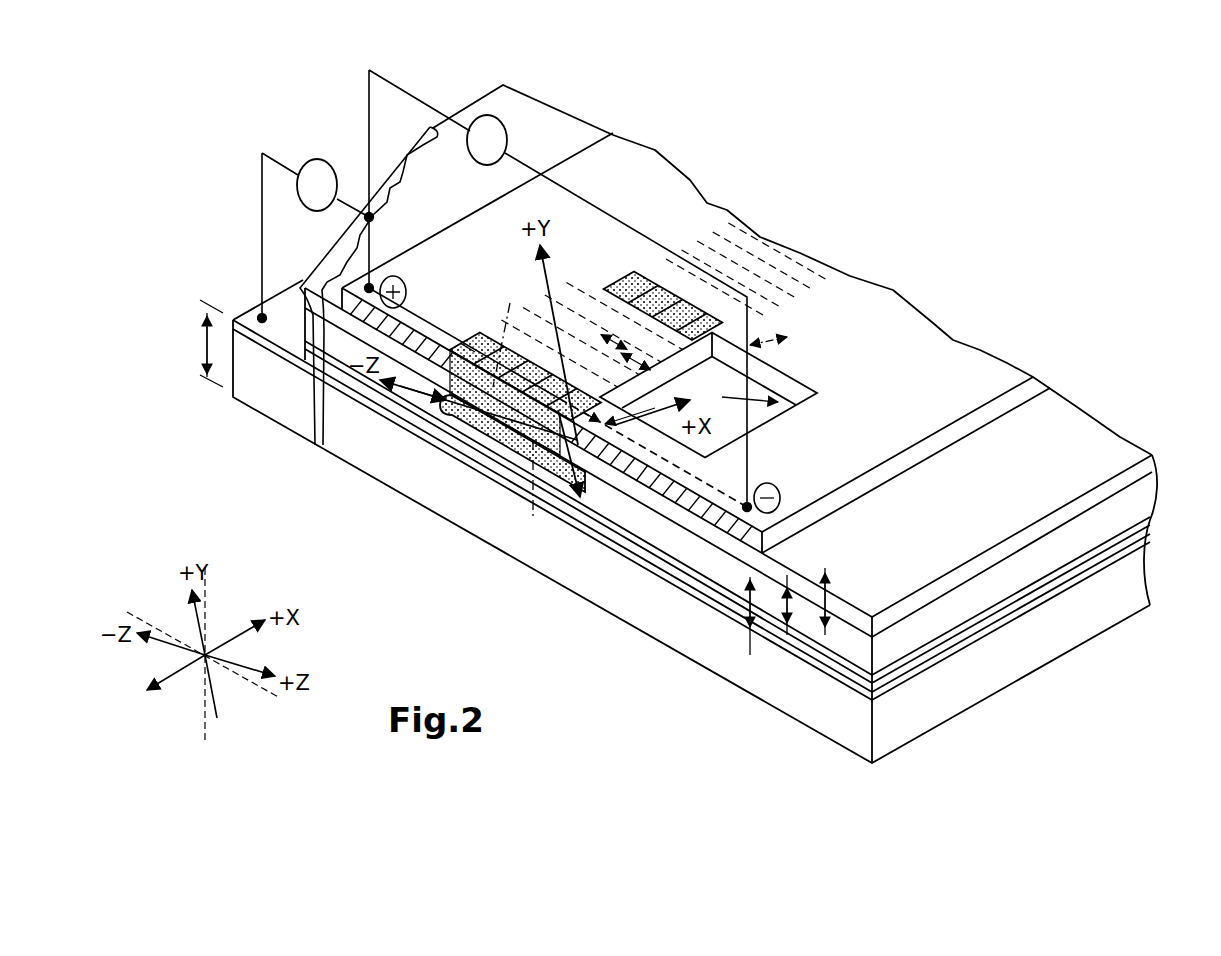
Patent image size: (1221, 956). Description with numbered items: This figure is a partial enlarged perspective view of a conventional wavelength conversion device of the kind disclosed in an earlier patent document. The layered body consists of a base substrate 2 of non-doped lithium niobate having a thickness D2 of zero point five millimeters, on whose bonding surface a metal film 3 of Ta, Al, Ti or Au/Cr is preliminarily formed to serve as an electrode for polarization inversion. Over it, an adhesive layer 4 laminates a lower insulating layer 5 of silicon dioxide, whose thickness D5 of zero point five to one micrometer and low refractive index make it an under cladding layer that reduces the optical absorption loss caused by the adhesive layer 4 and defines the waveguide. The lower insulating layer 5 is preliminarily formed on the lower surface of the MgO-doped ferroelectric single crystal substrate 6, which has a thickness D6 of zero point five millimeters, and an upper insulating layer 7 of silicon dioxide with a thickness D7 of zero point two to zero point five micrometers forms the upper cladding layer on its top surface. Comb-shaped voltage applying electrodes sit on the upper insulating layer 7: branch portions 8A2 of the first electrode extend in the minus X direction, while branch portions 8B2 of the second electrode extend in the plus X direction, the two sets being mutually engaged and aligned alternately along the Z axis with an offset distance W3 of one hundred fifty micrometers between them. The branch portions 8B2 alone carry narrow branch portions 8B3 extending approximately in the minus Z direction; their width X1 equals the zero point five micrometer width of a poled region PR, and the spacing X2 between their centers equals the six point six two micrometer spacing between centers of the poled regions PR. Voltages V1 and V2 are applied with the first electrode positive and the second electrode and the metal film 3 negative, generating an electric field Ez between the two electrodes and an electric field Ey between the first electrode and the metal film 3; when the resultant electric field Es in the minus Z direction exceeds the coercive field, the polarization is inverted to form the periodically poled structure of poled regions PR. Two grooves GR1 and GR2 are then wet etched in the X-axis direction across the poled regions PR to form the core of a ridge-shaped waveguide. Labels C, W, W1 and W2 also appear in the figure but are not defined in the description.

The base substrate 2 is at (1150, 580).
The metal film 3 is at (1148, 540).
The adhesive layer 4 is at (1150, 525).
The lower insulating layer 5 is at (1148, 520).
The ferroelectric single crystal substrate 6 is at (1150, 478).
The upper insulating layer 7 is at (1152, 462).
The branch portions 8A2 is at (632, 157).
The branch portions 8B2 is at (965, 360).
The narrow branch portions 8B3 is at (648, 444).
The cut line / boundary C is at (392, 165).
The voltage V1 is at (573, 291).
The voltage V2 is at (316, 238).
The stripe width W is at (625, 345).
The first stripe width W1 is at (665, 358).
The second stripe width W2 is at (702, 348).
The offset distance W3 is at (608, 360).
The poled region PR is at (693, 293).
The width of narrow branch portion X1 is at (785, 340).
The spacing between narrow branch portions X2 is at (680, 386).
The groove GR1 is at (536, 495).
The groove GR2 is at (508, 333).
The electric field Ez is at (458, 370).
The electric field Ey is at (583, 483).
The resultant electric field Es is at (450, 430).
The thickness of base substrate D2 is at (201, 343).
The thickness of lower insulating film D5 is at (748, 612).
The thickness of ferroelectric single crystal substrate D6 is at (790, 605).
The thickness of upper insulating film D7 is at (830, 605).